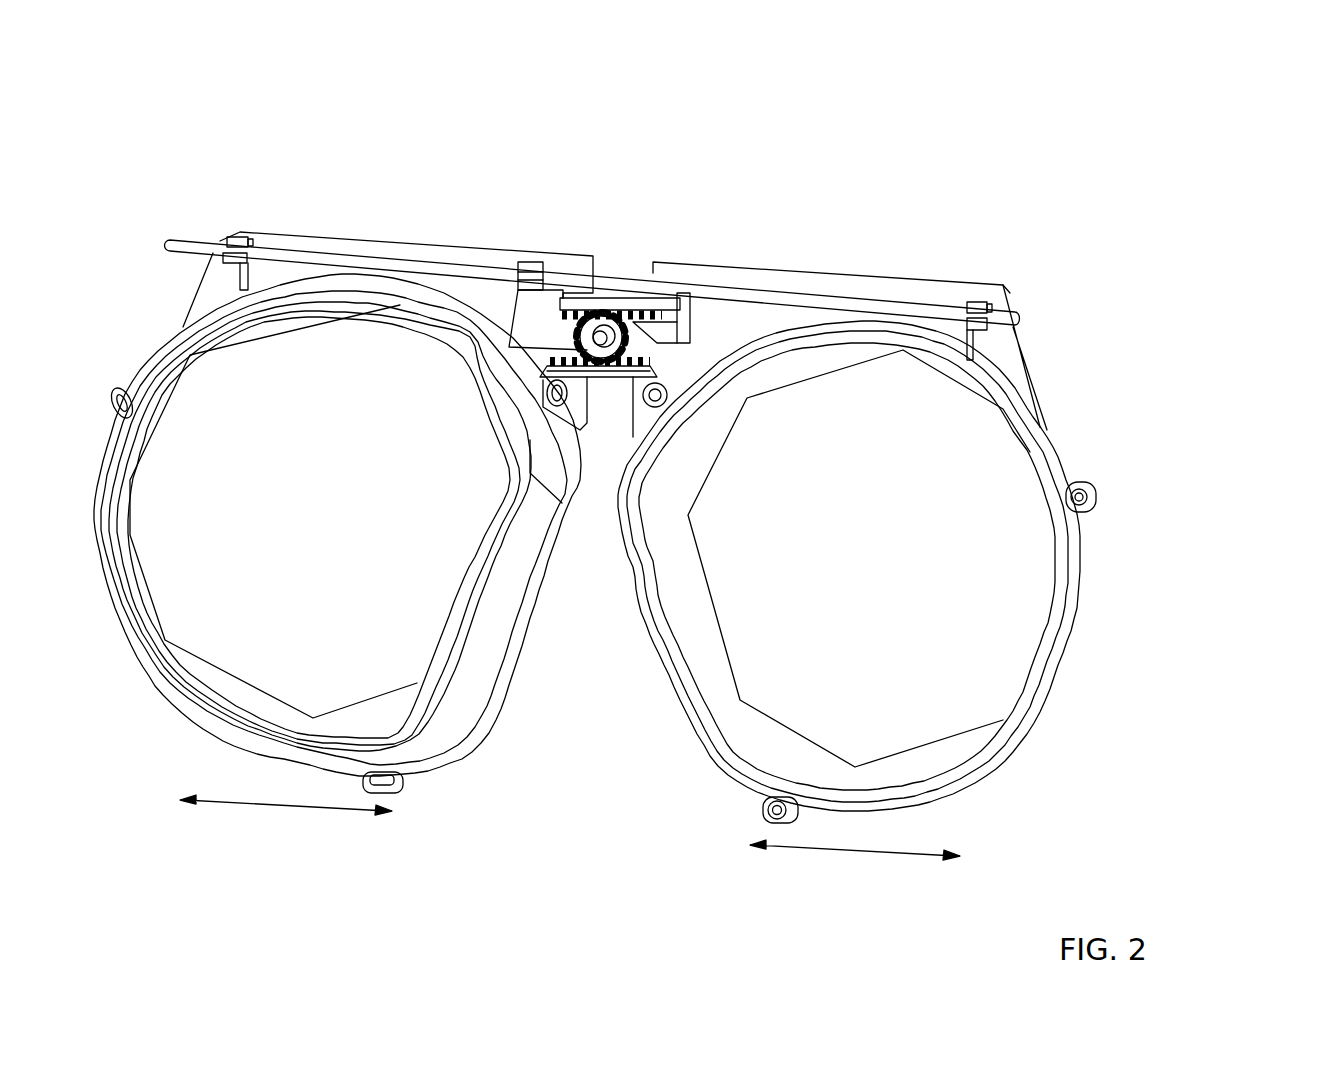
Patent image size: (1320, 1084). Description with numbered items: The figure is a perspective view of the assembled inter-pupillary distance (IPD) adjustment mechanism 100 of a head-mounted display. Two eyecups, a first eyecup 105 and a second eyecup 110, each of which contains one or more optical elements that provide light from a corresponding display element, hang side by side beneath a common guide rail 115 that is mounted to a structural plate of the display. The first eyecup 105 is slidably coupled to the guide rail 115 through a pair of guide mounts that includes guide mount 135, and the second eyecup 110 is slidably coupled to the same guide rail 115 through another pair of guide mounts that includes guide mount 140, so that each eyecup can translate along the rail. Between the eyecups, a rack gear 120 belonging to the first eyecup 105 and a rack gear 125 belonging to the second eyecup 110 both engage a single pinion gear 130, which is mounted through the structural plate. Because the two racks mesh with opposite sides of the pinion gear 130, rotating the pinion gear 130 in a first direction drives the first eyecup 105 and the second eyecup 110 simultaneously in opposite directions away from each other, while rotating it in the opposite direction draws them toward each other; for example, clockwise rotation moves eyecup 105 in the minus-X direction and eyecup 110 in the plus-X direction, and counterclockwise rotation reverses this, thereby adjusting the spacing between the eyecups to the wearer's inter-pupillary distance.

The IPD adjustment mechanism 100 is at (1077, 126).
The first eyecup 105 is at (293, 556).
The second eyecup 110 is at (855, 572).
The guide rail 115 is at (308, 253).
The rack gear 120 is at (514, 270).
The rack gear 125 is at (637, 290).
The pinion gear 130 is at (572, 293).
The guide mount 135 is at (233, 240).
The guide mount 140 is at (980, 302).